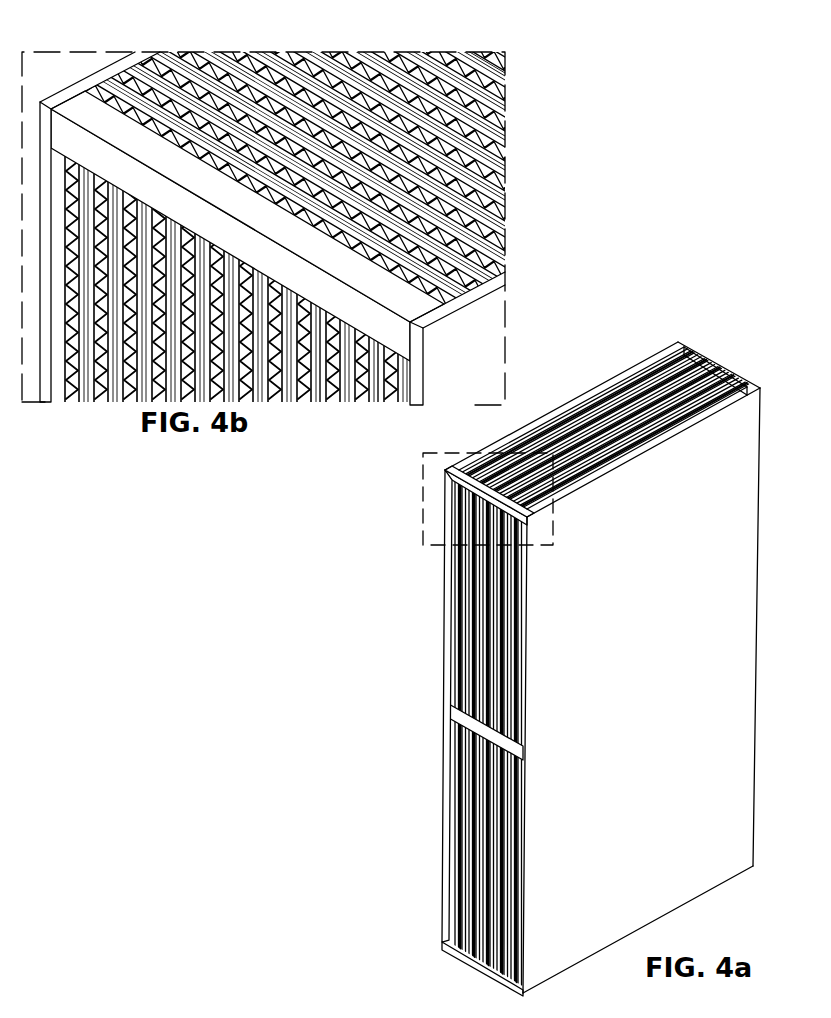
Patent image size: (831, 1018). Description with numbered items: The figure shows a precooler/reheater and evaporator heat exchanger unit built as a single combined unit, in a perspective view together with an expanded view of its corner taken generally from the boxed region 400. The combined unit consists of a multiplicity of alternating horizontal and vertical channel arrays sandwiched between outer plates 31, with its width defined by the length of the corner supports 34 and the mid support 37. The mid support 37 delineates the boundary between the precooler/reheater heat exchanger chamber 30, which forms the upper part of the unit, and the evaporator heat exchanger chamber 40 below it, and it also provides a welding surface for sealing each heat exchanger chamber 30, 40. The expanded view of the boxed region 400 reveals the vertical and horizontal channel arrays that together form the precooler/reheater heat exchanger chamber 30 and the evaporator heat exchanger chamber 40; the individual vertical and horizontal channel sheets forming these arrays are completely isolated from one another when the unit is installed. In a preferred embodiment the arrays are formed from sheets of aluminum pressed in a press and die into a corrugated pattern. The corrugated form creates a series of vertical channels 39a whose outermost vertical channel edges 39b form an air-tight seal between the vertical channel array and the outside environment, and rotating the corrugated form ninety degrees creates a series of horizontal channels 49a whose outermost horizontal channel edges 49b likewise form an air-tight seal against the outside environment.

In FIG. 4a, the precooler/reheater heat exchanger chamber 30 is at (345, 478).
In FIG. 4b, the outer plates 31 is at (457, 306).
In FIG. 4a, the outer plates 31 is at (657, 351).
In FIG. 4b, the corner supports 34 is at (88, 108).
In FIG. 4a, the corner supports 34 is at (697, 351).
In FIG. 4a, the mid support 37 is at (447, 722).
In FIG. 4b, the vertical channels 39a is at (480, 164).
In FIG. 4b, the outermost vertical channel edges 39b is at (318, 384).
In FIG. 4a, the evaporator heat exchanger chamber 40 is at (343, 718).
In FIG. 4b, the horizontal channels 49a is at (117, 352).
In FIG. 4b, the outermost horizontal channel edges 49b is at (478, 92).
In FIG. 4a, the boxed region 400 is at (423, 497).